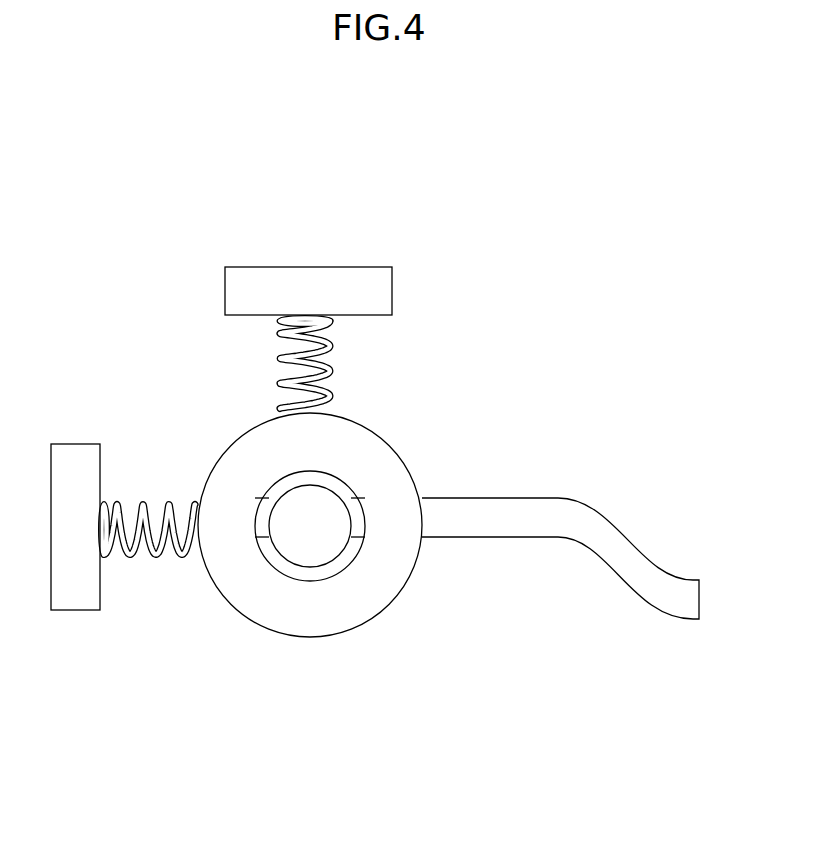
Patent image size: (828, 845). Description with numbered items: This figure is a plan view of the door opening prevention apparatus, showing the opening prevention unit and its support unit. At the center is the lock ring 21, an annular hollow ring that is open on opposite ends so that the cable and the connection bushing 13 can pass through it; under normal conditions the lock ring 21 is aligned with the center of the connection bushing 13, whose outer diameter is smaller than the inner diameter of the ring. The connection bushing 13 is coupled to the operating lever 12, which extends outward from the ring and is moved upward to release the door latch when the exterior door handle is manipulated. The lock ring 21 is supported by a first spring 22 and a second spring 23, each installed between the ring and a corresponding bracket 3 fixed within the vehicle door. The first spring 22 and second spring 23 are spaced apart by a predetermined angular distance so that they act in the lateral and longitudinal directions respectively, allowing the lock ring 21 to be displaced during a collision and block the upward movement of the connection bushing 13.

The bracket 3 is at (308, 283).
The operating lever 12 is at (614, 537).
The connection bushing 13 is at (310, 514).
The lock ring 21 is at (365, 580).
The first spring 22 is at (329, 360).
The second spring 23 is at (157, 554).